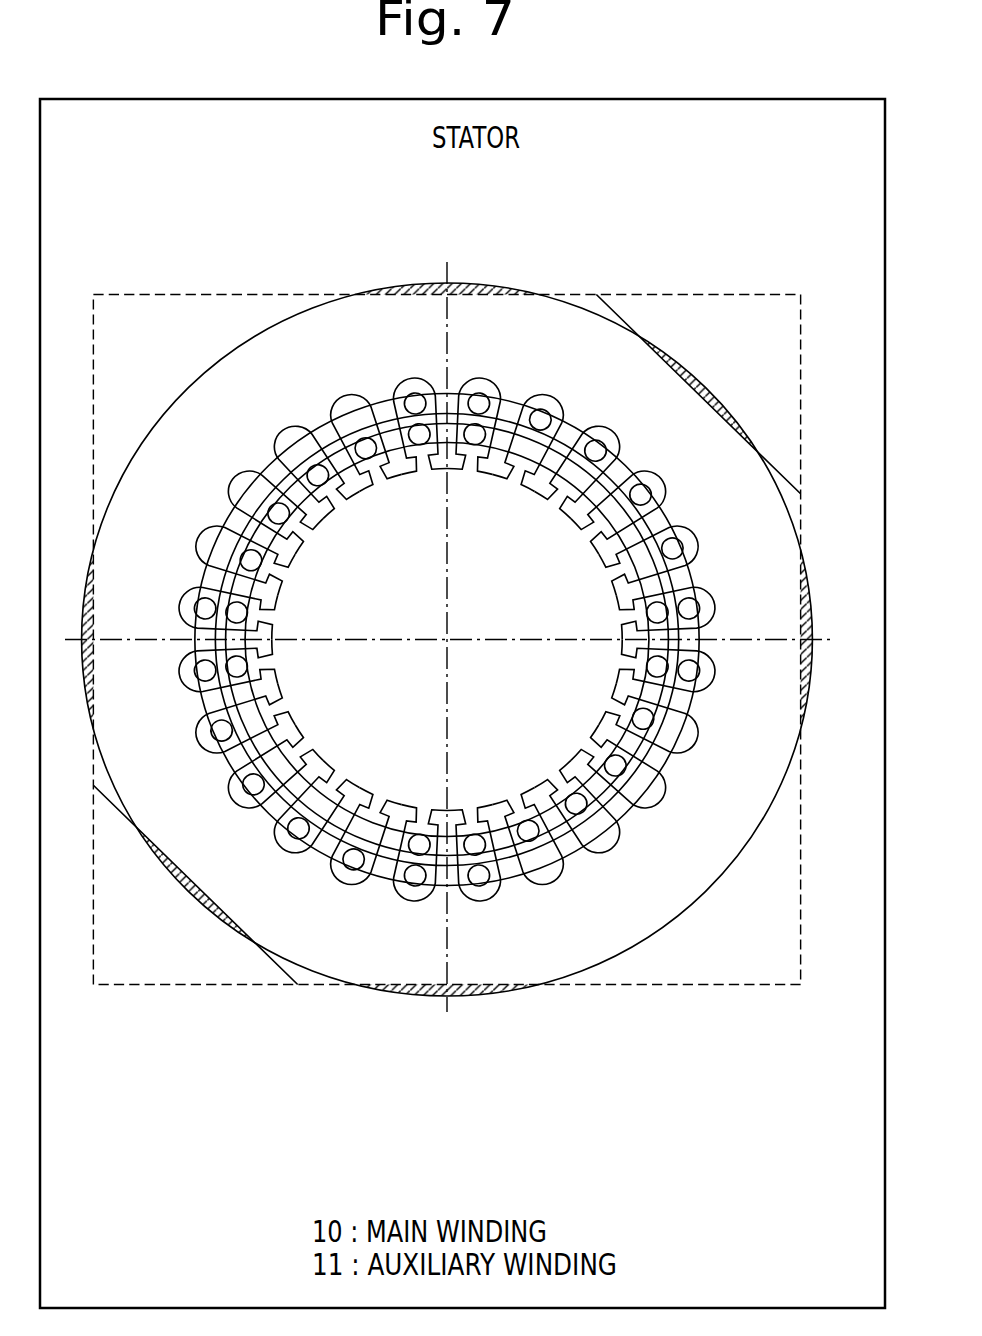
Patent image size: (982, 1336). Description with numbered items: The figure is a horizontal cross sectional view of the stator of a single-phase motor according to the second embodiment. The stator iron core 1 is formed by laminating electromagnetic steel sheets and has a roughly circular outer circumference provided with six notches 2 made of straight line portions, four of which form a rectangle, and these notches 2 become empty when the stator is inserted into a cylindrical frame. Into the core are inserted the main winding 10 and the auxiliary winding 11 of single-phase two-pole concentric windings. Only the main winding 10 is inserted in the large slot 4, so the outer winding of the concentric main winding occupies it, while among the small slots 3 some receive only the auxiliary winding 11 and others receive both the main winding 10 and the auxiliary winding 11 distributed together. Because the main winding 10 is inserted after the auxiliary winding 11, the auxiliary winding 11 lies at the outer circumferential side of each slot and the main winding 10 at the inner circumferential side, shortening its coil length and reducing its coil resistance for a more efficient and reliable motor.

The stator iron core 1 is at (393, 325).
The notch 2 is at (487, 985).
The small slot 3 is at (707, 678).
The large slot 4 is at (605, 845).
The main winding 10 is at (225, 478).
The auxiliary winding 11 is at (620, 440).